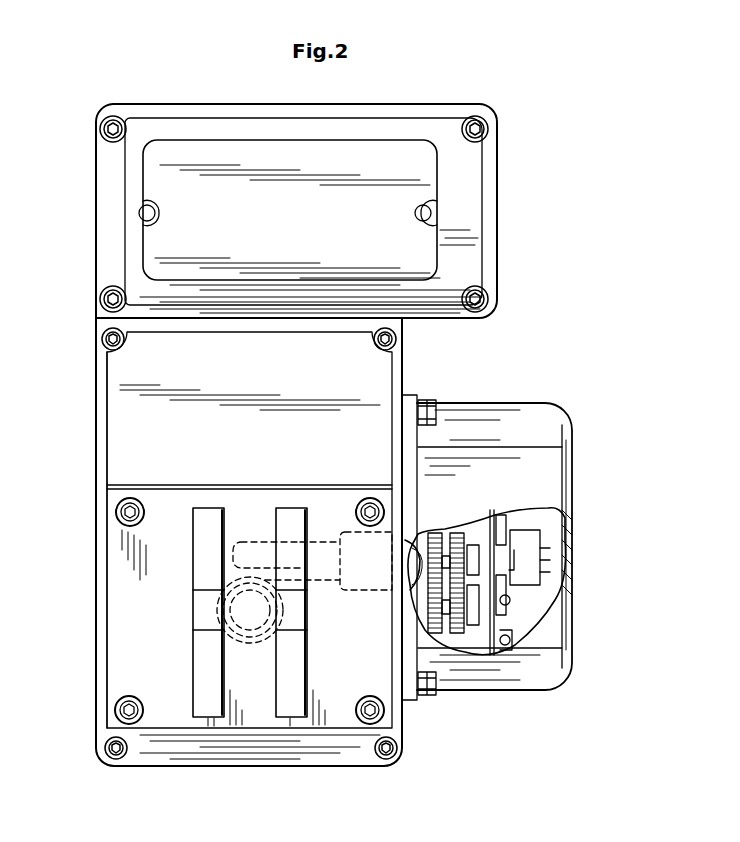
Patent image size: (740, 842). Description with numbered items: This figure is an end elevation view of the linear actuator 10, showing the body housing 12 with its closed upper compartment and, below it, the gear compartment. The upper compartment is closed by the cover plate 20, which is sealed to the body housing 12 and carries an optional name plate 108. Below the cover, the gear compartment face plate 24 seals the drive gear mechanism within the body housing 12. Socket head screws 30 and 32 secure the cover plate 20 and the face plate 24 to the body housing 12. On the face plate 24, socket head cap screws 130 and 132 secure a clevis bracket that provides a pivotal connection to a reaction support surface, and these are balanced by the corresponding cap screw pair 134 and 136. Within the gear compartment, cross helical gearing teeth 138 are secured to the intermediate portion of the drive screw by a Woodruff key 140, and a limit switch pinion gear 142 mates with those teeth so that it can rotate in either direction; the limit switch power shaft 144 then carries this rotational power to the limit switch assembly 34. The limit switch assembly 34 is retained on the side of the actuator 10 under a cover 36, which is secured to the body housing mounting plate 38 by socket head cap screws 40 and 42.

The linear actuator 10 is at (540, 198).
The body housing 12 is at (402, 383).
The cover plate 20 is at (470, 255).
The gear compartment face plate 24 is at (258, 385).
The socket head screws 30 is at (102, 303).
The socket head screws 32 is at (465, 306).
The limit switch assembly 34 is at (556, 520).
The cover 36 is at (480, 410).
The body housing mounting plate 38 is at (416, 403).
The socket head cap screw 40 is at (430, 404).
The socket head cap screw 42 is at (432, 697).
The name plate 108 is at (259, 148).
The socket head cap screw 130 is at (362, 722).
The socket head cap screw 132 is at (374, 499).
The cap screw 134 is at (116, 512).
The cap screw 136 is at (115, 710).
The cross helical gearing teeth 138 is at (247, 643).
The Woodruff key 140 is at (240, 602).
The limit switch pinion gear 142 is at (254, 545).
The limit switch power shaft 144 is at (324, 545).